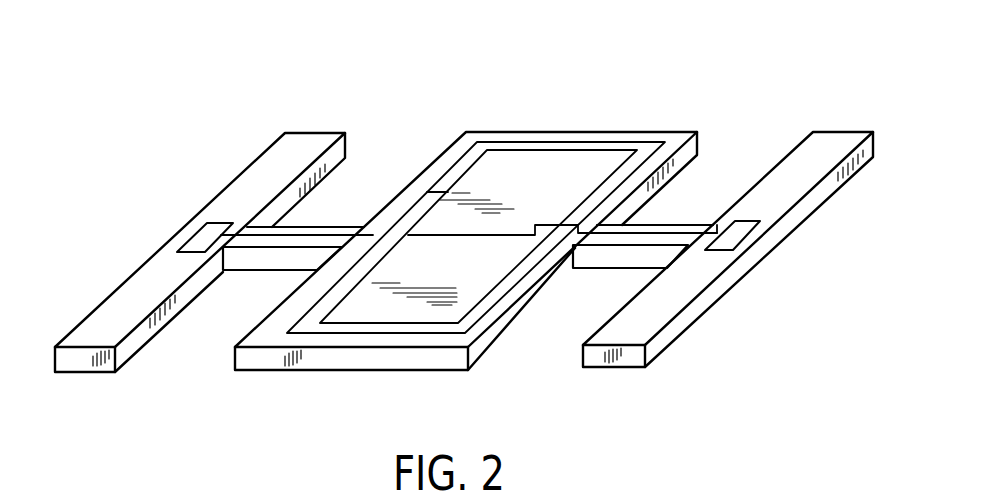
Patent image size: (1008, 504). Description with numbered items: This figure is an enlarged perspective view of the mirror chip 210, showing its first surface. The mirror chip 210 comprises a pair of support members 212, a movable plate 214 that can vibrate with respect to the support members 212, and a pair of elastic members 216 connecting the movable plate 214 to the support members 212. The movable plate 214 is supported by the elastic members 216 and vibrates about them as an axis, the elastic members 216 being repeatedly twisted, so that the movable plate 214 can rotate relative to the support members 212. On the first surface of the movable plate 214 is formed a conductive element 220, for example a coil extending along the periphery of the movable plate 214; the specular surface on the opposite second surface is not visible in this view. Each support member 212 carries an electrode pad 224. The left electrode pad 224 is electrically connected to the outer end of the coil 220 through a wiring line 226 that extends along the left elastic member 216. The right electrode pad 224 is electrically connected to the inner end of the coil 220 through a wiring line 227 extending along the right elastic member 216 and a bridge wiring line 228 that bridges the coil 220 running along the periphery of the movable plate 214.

The mirror chip 210 is at (386, 96).
The support members 212 is at (272, 156).
The movable plate 214 is at (596, 157).
The elastic members 216 is at (268, 252).
The conductive element 220 is at (526, 140).
The electrode pads 224 is at (200, 237).
The wiring line 226 is at (317, 232).
The wiring line 227 is at (630, 235).
The bridge wiring line 228 is at (545, 226).